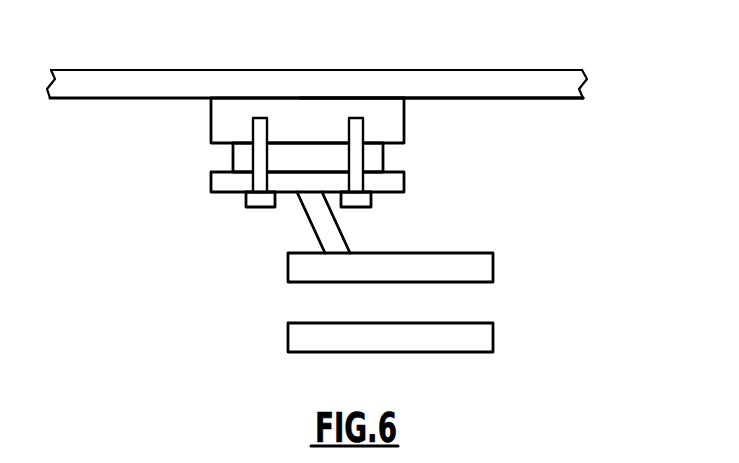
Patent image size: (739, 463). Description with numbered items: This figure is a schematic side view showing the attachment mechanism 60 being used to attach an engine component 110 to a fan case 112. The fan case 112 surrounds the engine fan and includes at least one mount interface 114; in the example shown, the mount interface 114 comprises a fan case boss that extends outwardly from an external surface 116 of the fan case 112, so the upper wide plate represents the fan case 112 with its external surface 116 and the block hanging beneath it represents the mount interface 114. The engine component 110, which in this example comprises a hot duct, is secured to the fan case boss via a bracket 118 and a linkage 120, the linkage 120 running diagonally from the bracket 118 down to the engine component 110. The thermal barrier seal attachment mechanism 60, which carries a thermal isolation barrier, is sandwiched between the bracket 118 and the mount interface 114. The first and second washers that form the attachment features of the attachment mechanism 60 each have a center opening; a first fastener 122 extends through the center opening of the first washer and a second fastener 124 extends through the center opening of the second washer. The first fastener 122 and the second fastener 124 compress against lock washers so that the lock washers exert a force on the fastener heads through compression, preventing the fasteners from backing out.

The fan case 112 is at (511, 80).
The external surface 116 is at (538, 98).
The mount interface 114 is at (210, 128).
The attachment mechanism 60 is at (232, 160).
The bracket 118 is at (212, 185).
The first fastener 122 is at (246, 206).
The second fastener 124 is at (372, 206).
The linkage 120 is at (343, 233).
The engine component 110 is at (460, 263).